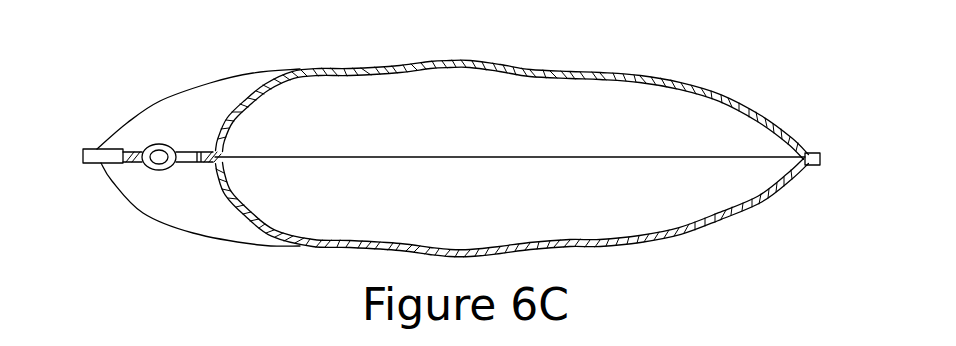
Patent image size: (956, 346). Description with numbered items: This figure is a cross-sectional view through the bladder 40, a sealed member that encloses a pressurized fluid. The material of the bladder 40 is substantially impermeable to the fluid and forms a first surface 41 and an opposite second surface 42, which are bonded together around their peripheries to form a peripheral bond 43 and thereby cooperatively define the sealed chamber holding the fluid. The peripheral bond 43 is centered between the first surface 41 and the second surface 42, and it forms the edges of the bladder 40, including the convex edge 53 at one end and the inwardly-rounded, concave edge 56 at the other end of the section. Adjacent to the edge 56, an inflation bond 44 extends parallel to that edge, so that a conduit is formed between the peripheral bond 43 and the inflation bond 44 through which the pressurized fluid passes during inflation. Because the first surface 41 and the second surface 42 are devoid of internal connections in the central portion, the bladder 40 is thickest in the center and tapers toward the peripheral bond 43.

The bladder 40 is at (136, 68).
The first surface 41 is at (613, 70).
The second surface 42 is at (620, 248).
The peripheral bond 43 is at (92, 148).
The inflation bond 44 is at (188, 148).
The edge 53 is at (822, 158).
The edge 56 is at (103, 160).